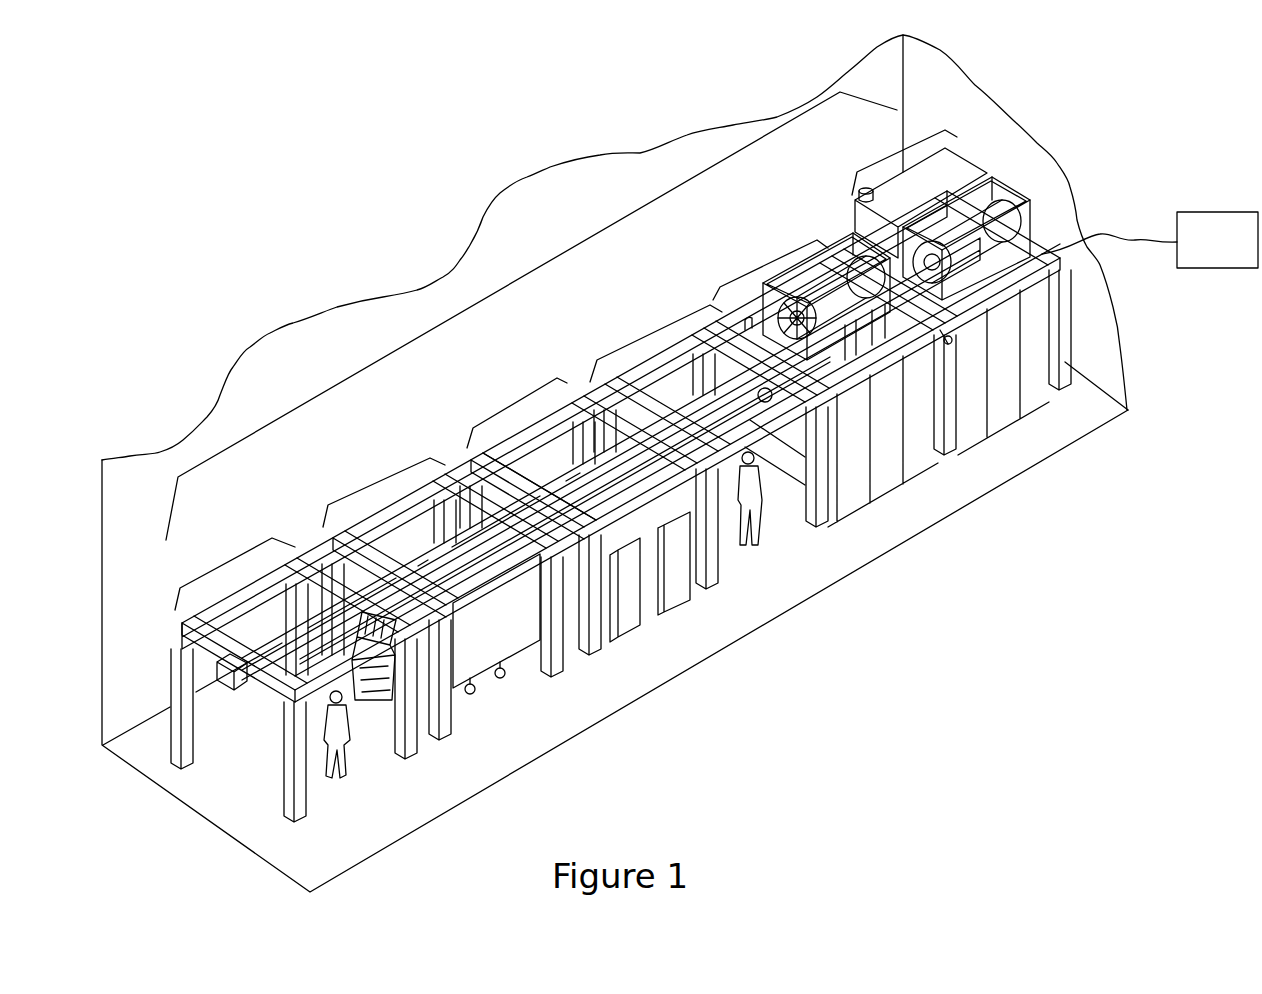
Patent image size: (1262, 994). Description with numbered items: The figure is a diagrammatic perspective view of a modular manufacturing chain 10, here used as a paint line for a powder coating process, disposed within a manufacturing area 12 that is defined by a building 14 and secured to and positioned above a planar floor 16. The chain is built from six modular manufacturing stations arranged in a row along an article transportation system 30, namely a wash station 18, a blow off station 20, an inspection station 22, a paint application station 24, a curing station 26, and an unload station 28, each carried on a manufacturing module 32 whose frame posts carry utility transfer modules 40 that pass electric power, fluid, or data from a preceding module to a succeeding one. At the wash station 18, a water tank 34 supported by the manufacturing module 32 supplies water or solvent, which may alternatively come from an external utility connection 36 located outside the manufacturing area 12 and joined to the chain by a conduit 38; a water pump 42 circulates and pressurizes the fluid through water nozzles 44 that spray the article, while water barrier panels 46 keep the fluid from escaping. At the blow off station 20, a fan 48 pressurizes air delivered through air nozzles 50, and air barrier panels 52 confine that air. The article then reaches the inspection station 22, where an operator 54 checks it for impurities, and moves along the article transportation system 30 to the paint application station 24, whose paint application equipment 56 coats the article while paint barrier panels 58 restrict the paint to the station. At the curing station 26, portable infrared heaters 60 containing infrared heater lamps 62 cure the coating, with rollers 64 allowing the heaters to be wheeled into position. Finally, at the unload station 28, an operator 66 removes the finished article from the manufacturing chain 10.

The manufacturing chain 10 is at (588, 237).
The manufacturing area 12 is at (536, 196).
The building 14 is at (992, 98).
The planar floor 16 is at (235, 835).
The wash station 18 is at (882, 158).
The blow off station 20 is at (768, 264).
The inspection station 22 is at (650, 335).
The paint application station 24 is at (520, 400).
The curing station 26 is at (390, 476).
The unload station 28 is at (230, 561).
The article transportation system 30 is at (416, 548).
The manufacturing module 32 is at (270, 688).
The water tank 34 is at (905, 199).
The external utility connection 36 is at (1205, 252).
The conduit 38 is at (1150, 238).
The utility transfer module 40 is at (306, 703).
The water pump 42 is at (995, 195).
The water nozzles 44 is at (947, 340).
The water barrier panels 46 is at (1007, 407).
The fan 48 is at (852, 268).
The air nozzles 50 is at (718, 387).
The air barrier panels 52 is at (885, 478).
The operator 54 is at (764, 508).
The paint application equipment 56 is at (538, 460).
The paint barrier panels 58 is at (633, 628).
The infrared heaters 60 is at (461, 656).
The infrared heater lamps 62 is at (362, 705).
The rollers 64 is at (500, 685).
The operator 66 is at (350, 755).